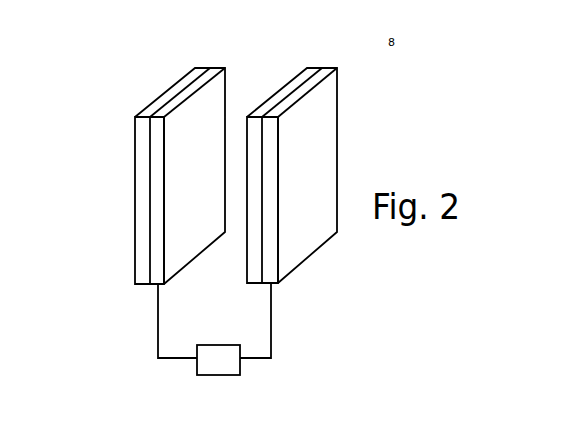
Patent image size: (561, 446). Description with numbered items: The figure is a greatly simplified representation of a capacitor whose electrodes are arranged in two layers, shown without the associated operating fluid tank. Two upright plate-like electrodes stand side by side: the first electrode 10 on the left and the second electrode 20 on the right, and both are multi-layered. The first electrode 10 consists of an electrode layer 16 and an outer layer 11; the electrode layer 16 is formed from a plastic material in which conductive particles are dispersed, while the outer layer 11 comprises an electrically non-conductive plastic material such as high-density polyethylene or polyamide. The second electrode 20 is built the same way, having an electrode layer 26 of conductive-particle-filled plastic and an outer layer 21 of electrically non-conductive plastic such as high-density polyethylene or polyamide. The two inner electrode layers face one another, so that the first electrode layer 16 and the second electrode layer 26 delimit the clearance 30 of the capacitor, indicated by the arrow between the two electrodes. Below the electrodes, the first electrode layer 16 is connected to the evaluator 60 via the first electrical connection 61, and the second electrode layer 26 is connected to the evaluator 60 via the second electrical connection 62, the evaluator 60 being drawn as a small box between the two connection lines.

The first electrode 10 is at (137, 159).
The outer layer 11 is at (141, 140).
The electrode layer 16 is at (157, 172).
The second electrode 20 is at (343, 195).
The outer layer 21 is at (276, 281).
The electrode layer 26 is at (255, 240).
The clearance 30 is at (231, 153).
The evaluator 60 is at (210, 366).
The first electrical connection 61 is at (158, 330).
The second electrical connection 62 is at (272, 332).